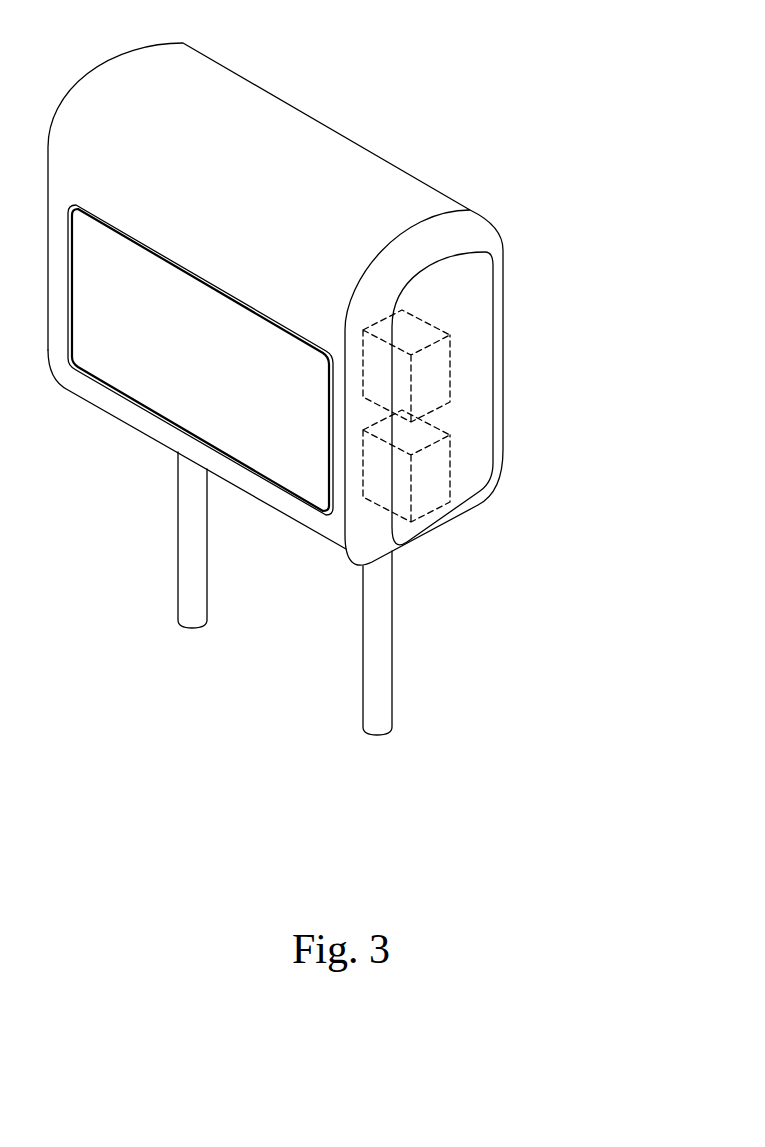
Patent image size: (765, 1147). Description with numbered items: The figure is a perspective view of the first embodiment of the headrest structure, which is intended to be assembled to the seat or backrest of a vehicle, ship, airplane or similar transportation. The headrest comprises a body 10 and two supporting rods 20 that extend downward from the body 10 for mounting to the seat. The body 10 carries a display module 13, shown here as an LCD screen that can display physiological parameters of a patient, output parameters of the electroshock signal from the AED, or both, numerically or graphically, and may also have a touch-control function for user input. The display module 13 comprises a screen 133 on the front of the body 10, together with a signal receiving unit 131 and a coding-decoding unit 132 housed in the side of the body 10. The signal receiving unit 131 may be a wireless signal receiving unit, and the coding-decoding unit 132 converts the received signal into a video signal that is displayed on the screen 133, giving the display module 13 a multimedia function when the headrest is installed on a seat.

The body 10 is at (238, 103).
The display module 13 is at (607, 192).
The signal receiving unit 131 is at (433, 367).
The coding-decoding unit 132 is at (433, 472).
The screen 133 is at (283, 358).
The supporting rods 20 is at (175, 530).